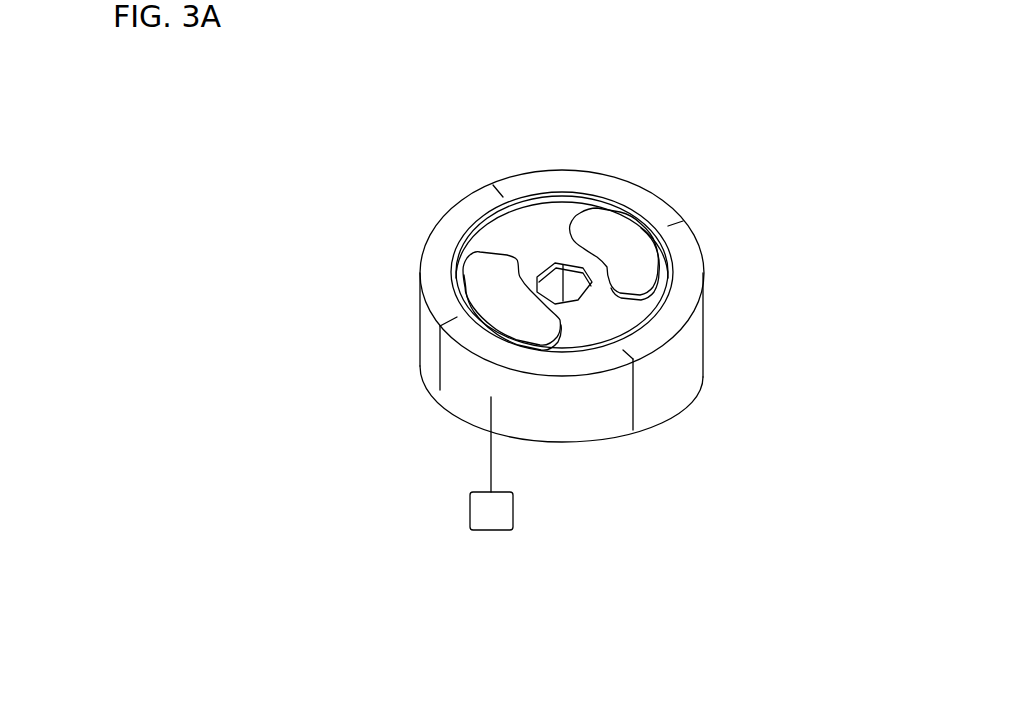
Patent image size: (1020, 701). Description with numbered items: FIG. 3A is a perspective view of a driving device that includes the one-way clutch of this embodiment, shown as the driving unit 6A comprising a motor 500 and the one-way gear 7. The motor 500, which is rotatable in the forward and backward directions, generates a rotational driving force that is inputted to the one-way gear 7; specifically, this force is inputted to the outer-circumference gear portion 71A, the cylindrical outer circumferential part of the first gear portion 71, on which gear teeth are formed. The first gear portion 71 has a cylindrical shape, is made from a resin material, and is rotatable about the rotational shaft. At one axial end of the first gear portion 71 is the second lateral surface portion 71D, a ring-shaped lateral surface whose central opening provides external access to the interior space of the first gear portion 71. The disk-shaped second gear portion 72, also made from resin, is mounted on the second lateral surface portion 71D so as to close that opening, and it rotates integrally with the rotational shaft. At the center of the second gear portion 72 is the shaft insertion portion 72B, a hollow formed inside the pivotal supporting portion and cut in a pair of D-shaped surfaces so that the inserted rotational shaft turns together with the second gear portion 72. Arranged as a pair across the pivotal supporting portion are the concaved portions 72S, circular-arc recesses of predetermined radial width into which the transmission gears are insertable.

The one-way gear 7 is at (559, 145).
The first gear portion 71 is at (458, 202).
The second gear portion 72 is at (535, 223).
The concaved portions 72S is at (620, 233).
The second lateral surface portion 71D is at (433, 302).
The outer-circumference gear portion 71A is at (449, 362).
The shaft insertion portion 72B is at (573, 288).
The motor 500 is at (513, 508).
The drive unit 6A is at (457, 473).